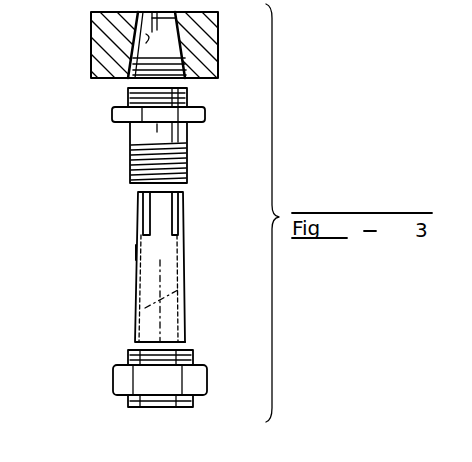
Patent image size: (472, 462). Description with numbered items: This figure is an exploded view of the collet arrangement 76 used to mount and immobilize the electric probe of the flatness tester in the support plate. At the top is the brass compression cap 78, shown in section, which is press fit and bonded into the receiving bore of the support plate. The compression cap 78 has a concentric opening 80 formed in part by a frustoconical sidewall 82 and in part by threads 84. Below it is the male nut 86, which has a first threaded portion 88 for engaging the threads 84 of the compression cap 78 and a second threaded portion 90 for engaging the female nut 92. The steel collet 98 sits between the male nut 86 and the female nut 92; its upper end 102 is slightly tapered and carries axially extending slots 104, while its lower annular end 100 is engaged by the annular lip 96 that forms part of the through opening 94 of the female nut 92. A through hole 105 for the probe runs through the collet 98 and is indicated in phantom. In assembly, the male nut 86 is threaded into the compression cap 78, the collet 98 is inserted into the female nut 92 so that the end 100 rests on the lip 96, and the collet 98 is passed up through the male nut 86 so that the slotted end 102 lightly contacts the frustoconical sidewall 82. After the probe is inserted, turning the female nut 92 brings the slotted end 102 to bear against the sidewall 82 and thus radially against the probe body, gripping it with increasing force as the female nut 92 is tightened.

The collet arrangement 76 is at (128, 254).
The compression cap 78 is at (91, 25).
The concentric opening 80 is at (160, 45).
The frustoconical sidewall 82 is at (140, 47).
The threads 84 is at (133, 80).
The male nut 86 is at (113, 112).
The first threaded portion 88 is at (187, 99).
The second threaded portion 90 is at (188, 157).
The female nut 92 is at (113, 375).
The through opening 94 is at (160, 407).
The annular lip 96 is at (150, 393).
The collet 98 is at (186, 252).
The annular end 100 is at (185, 342).
The slotted end 102 is at (138, 212).
The axially extending slots 104 is at (173, 212).
The through hole 105 is at (180, 289).